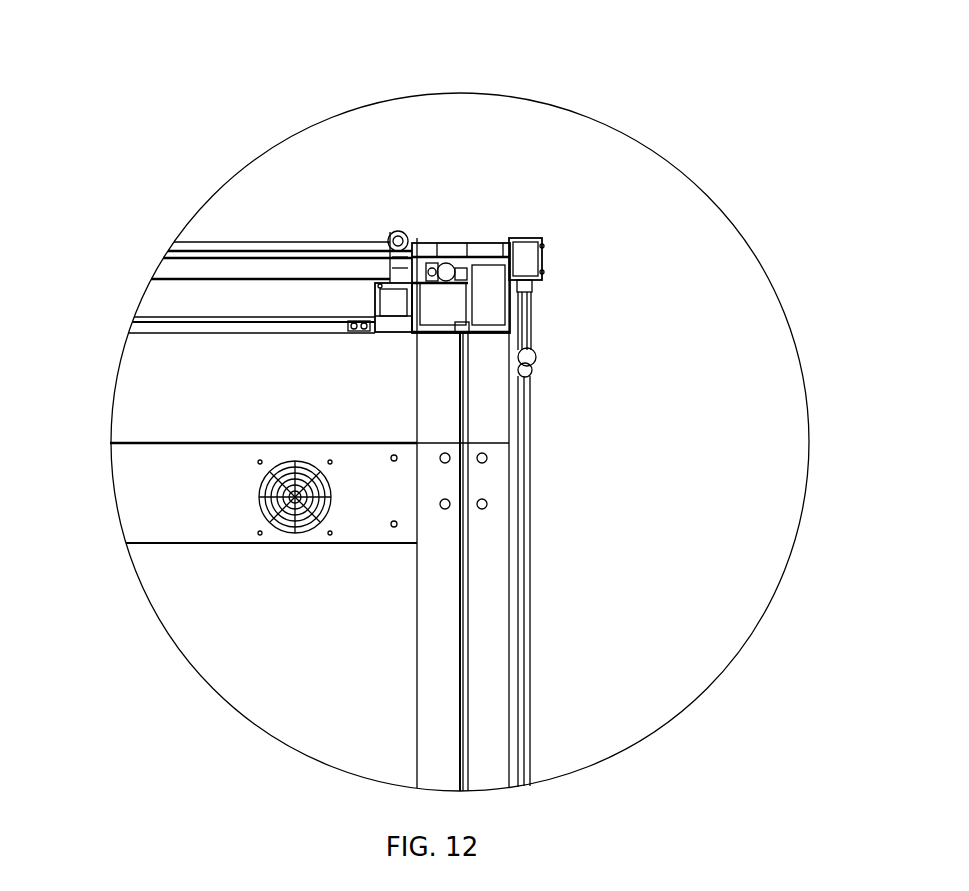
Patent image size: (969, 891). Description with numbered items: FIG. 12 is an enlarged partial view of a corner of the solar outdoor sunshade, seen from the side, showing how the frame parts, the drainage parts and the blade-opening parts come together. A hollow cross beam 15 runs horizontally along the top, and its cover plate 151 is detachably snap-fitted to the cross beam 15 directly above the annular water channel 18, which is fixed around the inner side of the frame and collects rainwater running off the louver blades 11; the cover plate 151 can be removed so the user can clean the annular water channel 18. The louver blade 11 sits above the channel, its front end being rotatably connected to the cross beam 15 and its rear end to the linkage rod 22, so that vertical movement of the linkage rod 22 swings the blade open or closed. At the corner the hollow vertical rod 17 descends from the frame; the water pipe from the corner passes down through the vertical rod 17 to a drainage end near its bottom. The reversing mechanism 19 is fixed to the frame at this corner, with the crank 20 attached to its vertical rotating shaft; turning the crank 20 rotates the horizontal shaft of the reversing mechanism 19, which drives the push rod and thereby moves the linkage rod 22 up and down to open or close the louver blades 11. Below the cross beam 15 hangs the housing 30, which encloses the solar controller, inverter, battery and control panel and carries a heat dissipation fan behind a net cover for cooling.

The louver blade 11 is at (272, 264).
The cross beam 15 is at (493, 242).
The vertical rod 17 is at (490, 650).
The annular water channel 18 is at (378, 282).
The reversing mechanism 19 is at (521, 262).
The crank 20 is at (528, 459).
The linkage rod 22 is at (396, 231).
The housing 30 is at (203, 475).
The cover plate 151 is at (440, 255).